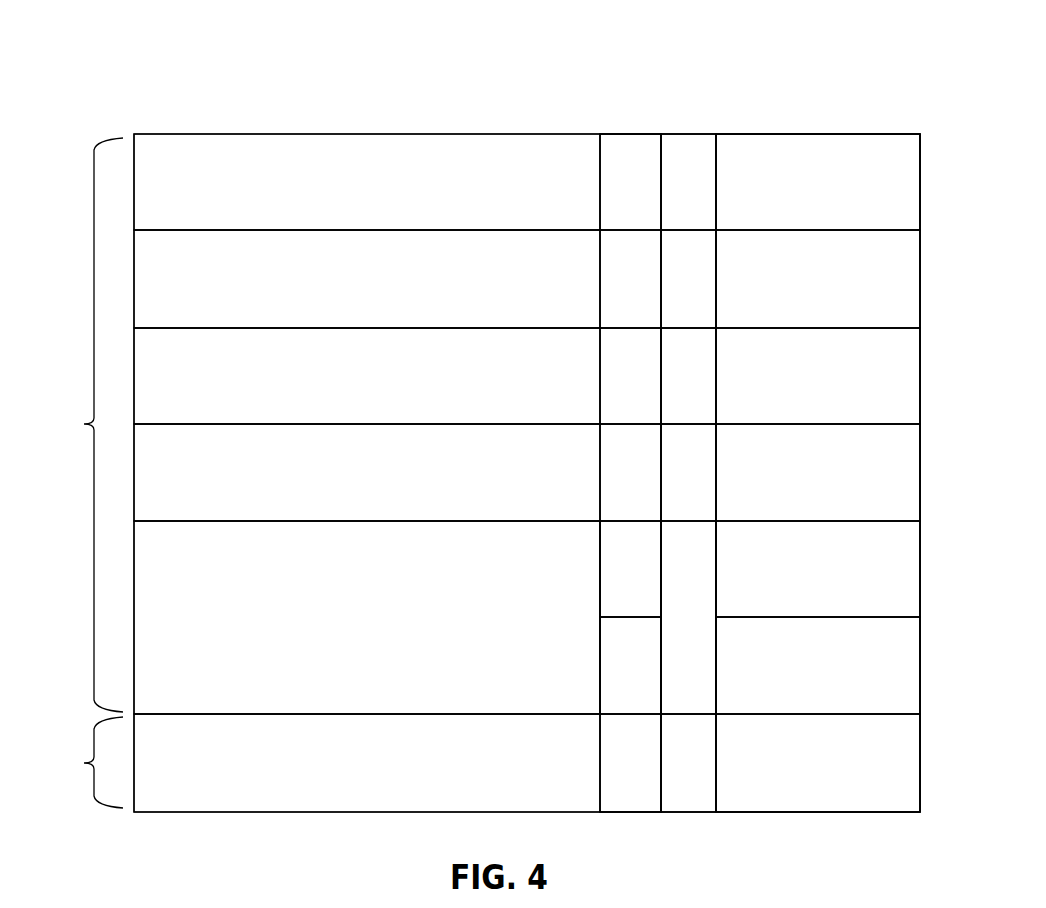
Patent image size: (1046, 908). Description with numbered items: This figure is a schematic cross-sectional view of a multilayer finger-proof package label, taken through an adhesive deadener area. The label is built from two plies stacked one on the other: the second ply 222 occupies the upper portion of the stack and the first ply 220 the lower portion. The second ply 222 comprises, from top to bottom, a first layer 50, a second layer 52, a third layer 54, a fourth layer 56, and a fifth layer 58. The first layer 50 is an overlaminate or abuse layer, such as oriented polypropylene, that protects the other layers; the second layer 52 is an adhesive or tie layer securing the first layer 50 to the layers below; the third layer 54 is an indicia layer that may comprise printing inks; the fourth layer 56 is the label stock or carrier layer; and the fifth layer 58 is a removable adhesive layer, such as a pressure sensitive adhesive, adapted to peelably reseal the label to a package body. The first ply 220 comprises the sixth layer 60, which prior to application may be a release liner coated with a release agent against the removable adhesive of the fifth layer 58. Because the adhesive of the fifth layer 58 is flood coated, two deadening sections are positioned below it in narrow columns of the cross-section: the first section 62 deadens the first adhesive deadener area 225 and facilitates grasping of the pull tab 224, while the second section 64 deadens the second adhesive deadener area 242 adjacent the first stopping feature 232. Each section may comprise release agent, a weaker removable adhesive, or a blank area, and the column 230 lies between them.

The first layer 50 is at (351, 195).
The second layer 52 is at (351, 292).
The third layer 54 is at (351, 389).
The fourth layer 56 is at (351, 485).
The fifth layer 58 is at (351, 617).
The sixth layer 60 is at (351, 776).
The first section 62 is at (803, 681).
The second section 64 is at (616, 681).
The first ply 220 is at (84, 763).
The second ply 222 is at (84, 424).
The pull tab 224 is at (821, 112).
The first adhesive deadener area 225 is at (821, 112).
The middle section 230 is at (664, 120).
The first stopping feature 232 is at (624, 108).
The second adhesive deadener area 242 is at (624, 108).